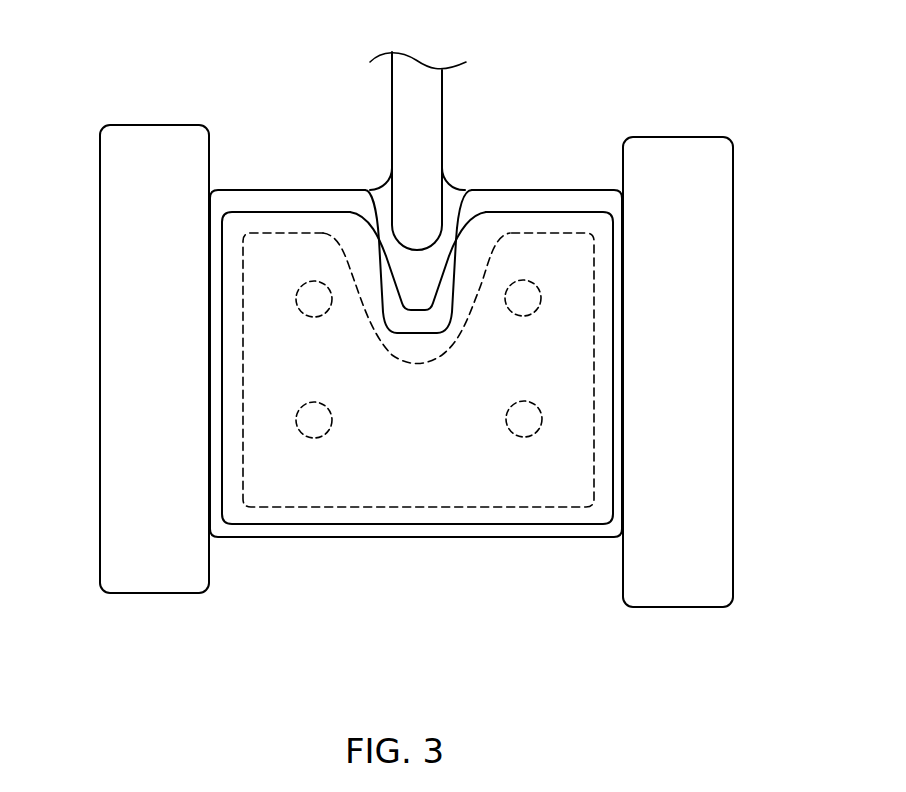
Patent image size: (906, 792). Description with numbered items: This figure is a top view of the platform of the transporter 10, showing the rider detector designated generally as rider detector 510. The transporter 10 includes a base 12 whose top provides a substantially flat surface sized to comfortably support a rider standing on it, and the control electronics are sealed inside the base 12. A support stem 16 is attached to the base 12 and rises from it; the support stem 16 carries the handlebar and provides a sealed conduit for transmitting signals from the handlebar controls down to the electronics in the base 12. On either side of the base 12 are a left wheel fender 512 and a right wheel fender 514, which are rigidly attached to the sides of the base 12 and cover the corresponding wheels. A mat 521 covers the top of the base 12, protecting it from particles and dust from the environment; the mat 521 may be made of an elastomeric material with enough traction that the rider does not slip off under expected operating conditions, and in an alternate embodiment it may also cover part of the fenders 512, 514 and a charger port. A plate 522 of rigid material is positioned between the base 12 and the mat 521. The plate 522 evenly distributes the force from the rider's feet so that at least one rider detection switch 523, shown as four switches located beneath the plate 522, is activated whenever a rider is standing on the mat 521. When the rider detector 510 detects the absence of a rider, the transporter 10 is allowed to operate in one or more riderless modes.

The transporter 10 is at (70, 73).
The base 12 is at (243, 540).
The support stem 16 is at (443, 102).
The rider detector 510 is at (565, 133).
The left wheel fender 512 is at (143, 596).
The right wheel fender 514 is at (678, 609).
The mat 521 is at (343, 525).
The plate 522 is at (450, 510).
The rider detection switch 523 is at (311, 281).